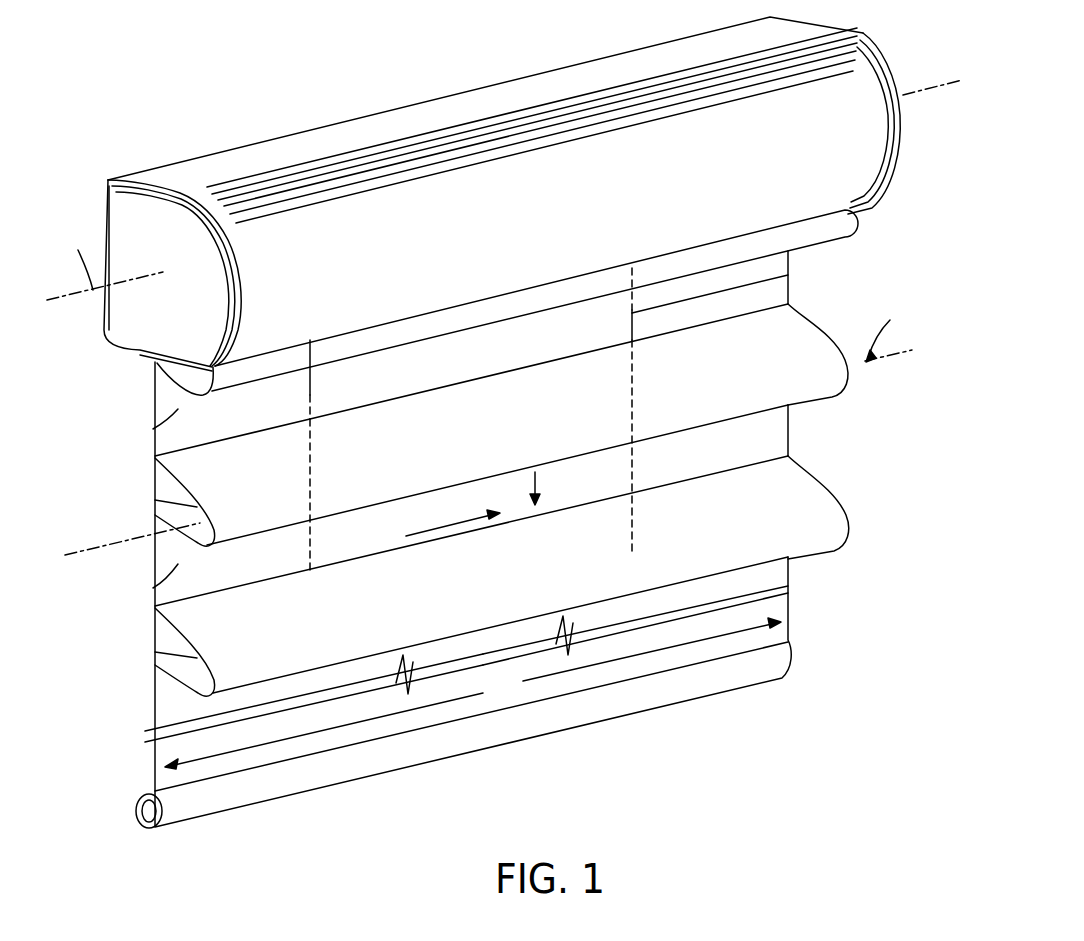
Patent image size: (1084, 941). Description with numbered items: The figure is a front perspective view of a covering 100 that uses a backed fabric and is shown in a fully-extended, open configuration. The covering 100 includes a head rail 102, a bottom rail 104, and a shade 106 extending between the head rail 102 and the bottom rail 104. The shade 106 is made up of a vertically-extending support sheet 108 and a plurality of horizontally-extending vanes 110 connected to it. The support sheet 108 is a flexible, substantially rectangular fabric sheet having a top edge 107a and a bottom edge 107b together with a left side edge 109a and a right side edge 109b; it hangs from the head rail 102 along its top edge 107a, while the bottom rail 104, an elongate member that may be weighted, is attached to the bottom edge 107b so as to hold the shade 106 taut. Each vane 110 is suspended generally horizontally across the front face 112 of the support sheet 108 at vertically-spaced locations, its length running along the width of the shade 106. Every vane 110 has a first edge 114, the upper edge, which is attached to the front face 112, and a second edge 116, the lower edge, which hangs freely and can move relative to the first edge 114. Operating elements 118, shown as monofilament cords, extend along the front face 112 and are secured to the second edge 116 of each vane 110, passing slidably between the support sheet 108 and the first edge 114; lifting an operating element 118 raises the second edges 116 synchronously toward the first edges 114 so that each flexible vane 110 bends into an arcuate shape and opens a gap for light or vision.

The covering 100 is at (353, 63).
The head rail 102 is at (517, 96).
The bottom rail 104 is at (673, 690).
The shade 106 is at (846, 432).
The top edge 107a is at (148, 362).
The bottom edge 107b is at (410, 735).
The support sheet 108 is at (155, 586).
The left side edge 109a is at (155, 702).
The right side edge 109b is at (793, 603).
The vane 110 is at (817, 538).
The front face 112 is at (155, 429).
The first edge 114 is at (513, 367).
The second edge 116 is at (177, 507).
The operating element 118 is at (792, 276).